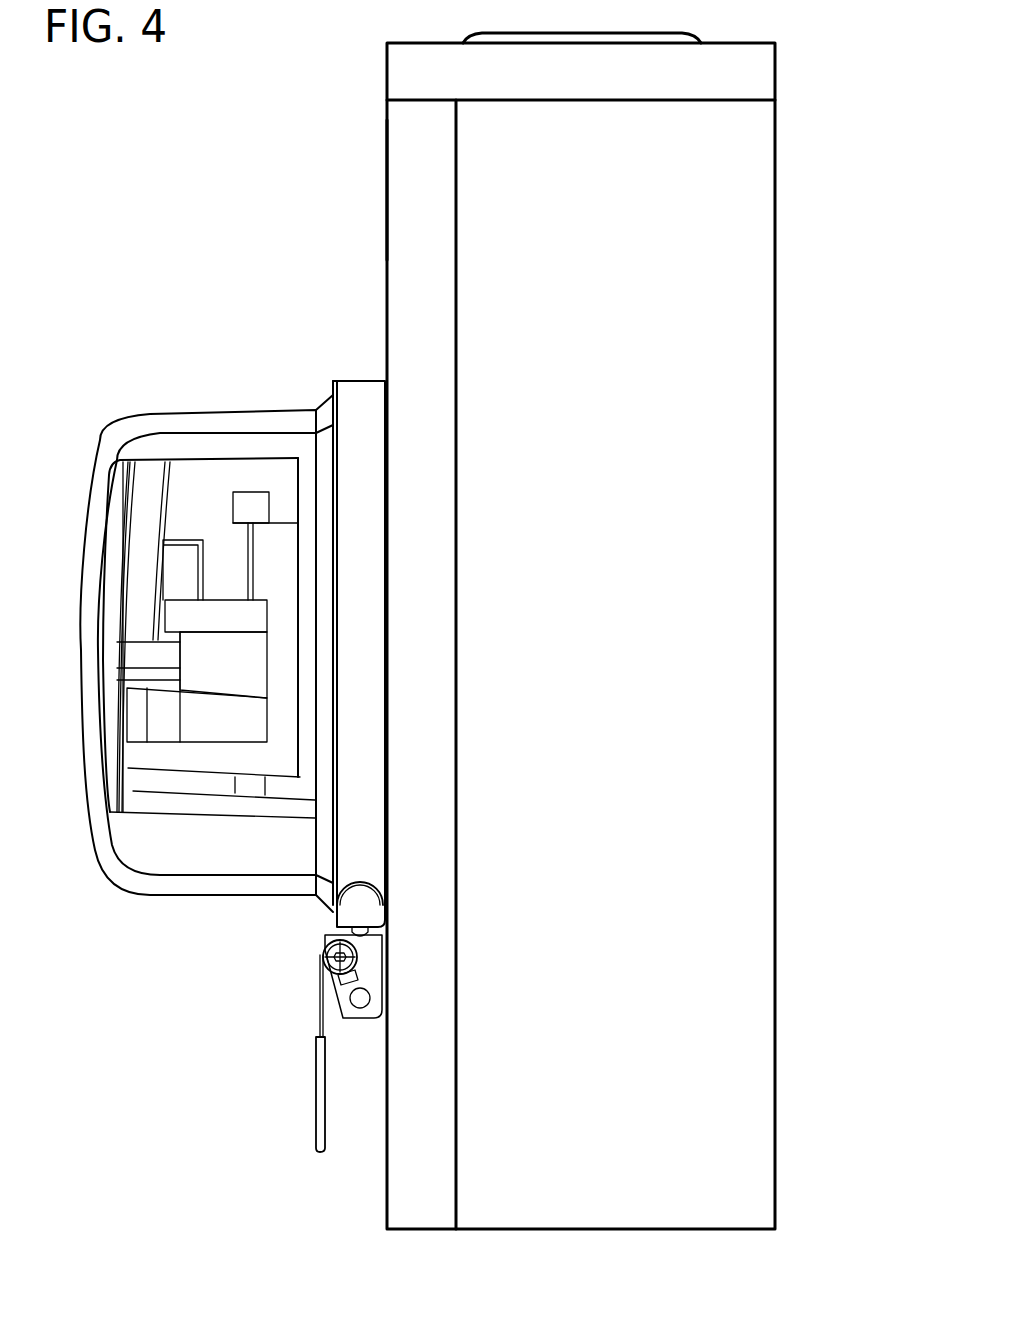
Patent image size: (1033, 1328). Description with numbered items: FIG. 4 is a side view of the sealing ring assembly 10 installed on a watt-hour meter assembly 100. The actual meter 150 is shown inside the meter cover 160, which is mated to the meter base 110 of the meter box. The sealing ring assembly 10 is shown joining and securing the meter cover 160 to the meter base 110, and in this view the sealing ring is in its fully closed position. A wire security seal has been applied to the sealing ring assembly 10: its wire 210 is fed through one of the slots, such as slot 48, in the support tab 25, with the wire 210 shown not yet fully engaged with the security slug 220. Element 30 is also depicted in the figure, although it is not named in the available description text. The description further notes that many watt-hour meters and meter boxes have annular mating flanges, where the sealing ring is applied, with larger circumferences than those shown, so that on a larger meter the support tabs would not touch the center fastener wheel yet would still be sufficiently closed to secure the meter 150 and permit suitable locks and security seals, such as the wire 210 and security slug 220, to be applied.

The watt-hour meter assembly 100 is at (693, 302).
The meter base 110 is at (387, 193).
The sealing ring assembly 10 is at (355, 380).
The meter cover 160 is at (103, 433).
The meter 150 is at (200, 662).
The hinge latch assembly 30 is at (327, 937).
The slot 48 is at (322, 945).
The support tab 25 is at (374, 975).
The wire 210 is at (317, 1025).
The security slug 220 is at (315, 1093).